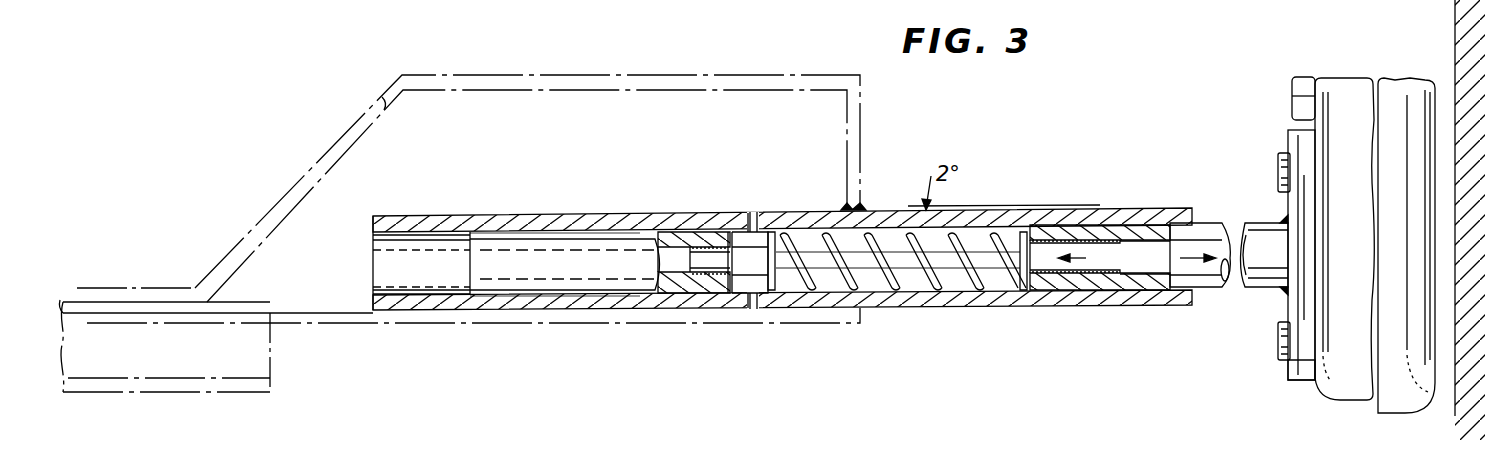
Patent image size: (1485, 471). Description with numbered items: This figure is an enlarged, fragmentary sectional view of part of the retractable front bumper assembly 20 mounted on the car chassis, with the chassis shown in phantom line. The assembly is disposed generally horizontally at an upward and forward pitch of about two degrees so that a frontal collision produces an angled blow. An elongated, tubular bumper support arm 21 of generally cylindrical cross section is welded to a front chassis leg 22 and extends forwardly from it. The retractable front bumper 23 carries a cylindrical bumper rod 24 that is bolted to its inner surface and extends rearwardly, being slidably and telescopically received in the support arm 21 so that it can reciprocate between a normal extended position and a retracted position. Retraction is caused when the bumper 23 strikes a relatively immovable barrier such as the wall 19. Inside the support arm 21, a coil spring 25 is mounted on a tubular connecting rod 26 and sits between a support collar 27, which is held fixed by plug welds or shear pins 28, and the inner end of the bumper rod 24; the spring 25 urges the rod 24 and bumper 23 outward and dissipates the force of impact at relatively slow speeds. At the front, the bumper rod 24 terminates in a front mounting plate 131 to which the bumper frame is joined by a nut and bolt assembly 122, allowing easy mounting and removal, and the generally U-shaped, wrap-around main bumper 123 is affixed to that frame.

The wall 19 is at (1455, 48).
The retractable front bumper assembly 20 is at (1065, 204).
The tubular bumper support arm 21 is at (1109, 306).
The front chassis leg 22 is at (863, 153).
The retractable front bumper 23 is at (1287, 142).
The bumper rod 24 is at (1221, 290).
The coil spring 25 is at (991, 230).
The tubular connecting rod 26 is at (963, 275).
The support collar 27 is at (760, 218).
The shear pin 28 is at (745, 217).
The nut and bolt assembly 122 is at (1278, 171).
The main bumper 123 is at (1345, 78).
The front mounting plate 131 is at (1290, 368).